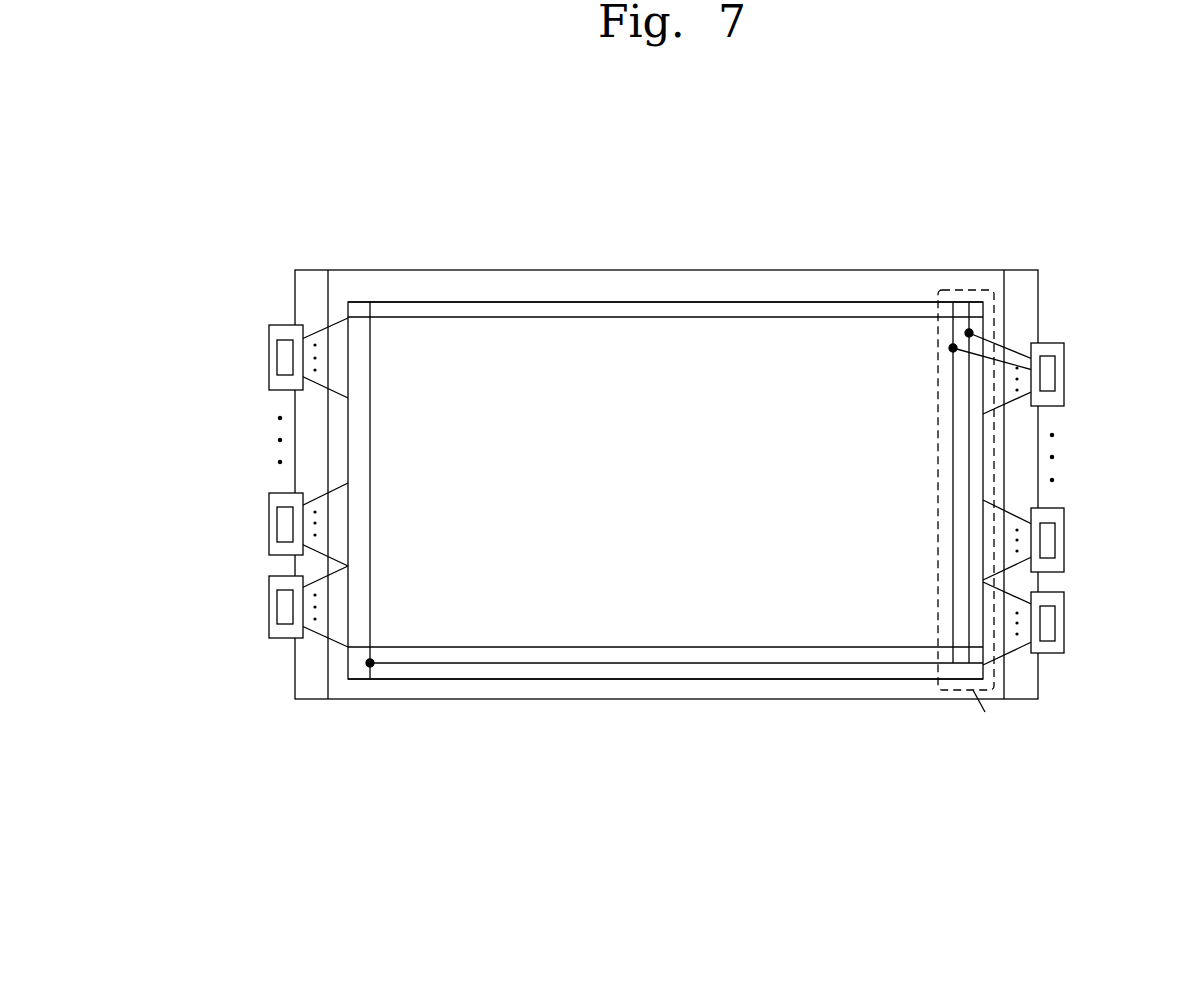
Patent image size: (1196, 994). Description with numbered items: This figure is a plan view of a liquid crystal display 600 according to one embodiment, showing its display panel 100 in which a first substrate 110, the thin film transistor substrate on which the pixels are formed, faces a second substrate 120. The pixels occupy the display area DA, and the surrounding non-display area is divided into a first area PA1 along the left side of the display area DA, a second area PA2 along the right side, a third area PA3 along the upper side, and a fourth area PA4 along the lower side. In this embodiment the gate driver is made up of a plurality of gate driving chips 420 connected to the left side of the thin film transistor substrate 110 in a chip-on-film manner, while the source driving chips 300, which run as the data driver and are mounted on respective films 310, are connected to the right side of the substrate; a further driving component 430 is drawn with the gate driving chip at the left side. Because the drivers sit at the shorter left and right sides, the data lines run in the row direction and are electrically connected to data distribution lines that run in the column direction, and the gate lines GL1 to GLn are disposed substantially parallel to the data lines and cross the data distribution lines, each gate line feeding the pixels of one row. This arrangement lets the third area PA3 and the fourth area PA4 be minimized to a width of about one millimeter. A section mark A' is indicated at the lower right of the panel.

The liquid crystal display 600 is at (293, 169).
The display panel 100 is at (998, 427).
The first substrate 110 is at (1022, 270).
The second substrate 120 is at (966, 444).
The gate driving chips 420 is at (286, 340).
The gate driving chip 430 is at (269, 358).
The source driving chips 300 is at (1055, 378).
The films 310 is at (1064, 356).
The first area PA1 is at (303, 419).
The second area PA2 is at (1028, 484).
The third area PA3 is at (648, 287).
The fourth area PA4 is at (696, 688).
The display area DA is at (917, 440).
The gate line GL1 is at (770, 317).
The gate line GLn is at (507, 647).
The cross-section line A- A' is at (983, 728).